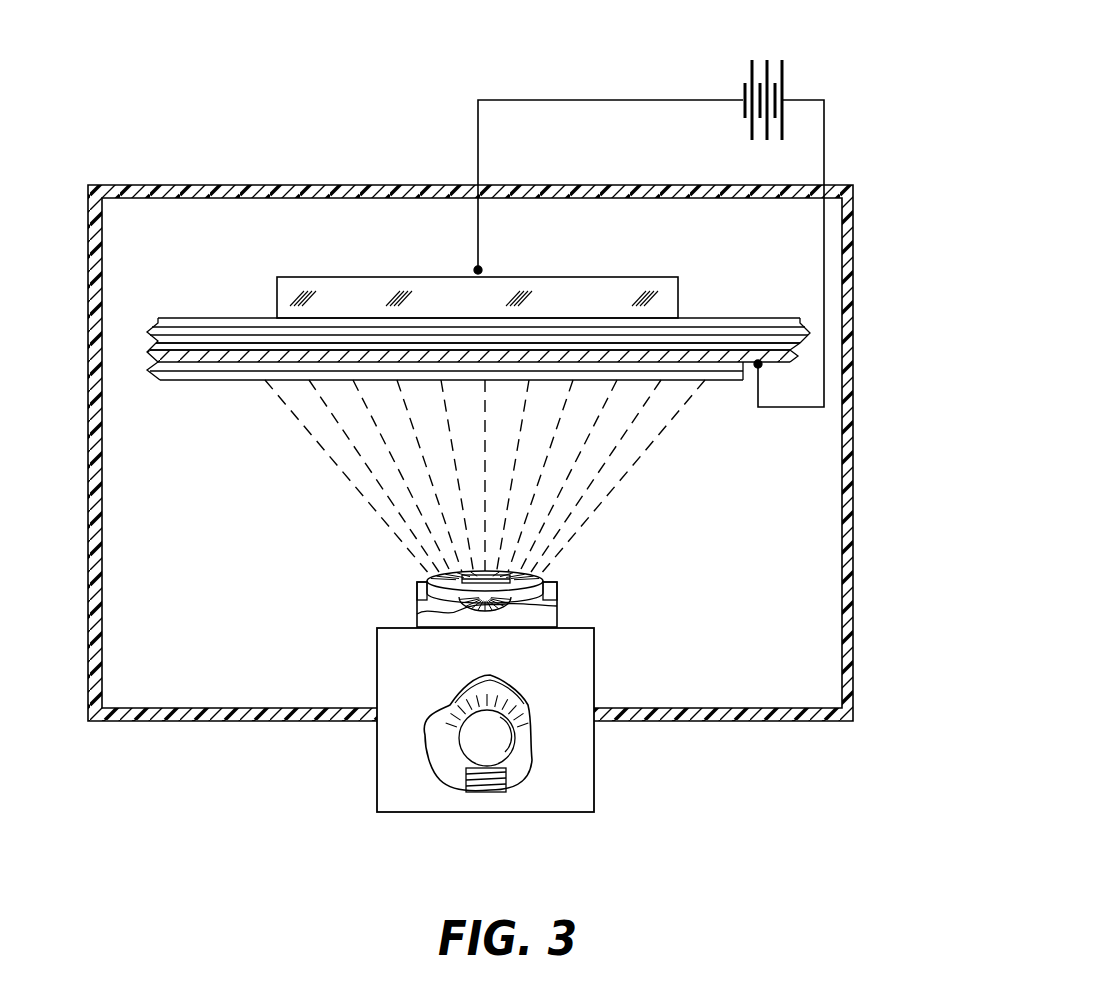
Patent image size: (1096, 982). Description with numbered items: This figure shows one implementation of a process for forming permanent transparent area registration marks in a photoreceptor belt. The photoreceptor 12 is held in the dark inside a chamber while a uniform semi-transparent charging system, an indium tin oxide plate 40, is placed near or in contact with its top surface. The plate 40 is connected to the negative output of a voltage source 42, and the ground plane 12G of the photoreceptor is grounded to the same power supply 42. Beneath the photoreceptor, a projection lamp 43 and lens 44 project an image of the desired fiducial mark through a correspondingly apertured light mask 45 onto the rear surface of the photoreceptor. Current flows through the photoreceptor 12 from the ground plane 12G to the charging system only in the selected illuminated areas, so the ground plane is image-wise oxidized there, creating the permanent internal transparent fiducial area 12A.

The photoreceptor 12 is at (523, 400).
The illuminated area 12A is at (440, 352).
The ground plane 12G is at (673, 358).
The indium tin oxide plate 40 is at (590, 283).
The voltage source 42 is at (785, 75).
The projection lamp 43 is at (495, 747).
The lens 44 is at (491, 580).
The light mask 45 is at (537, 570).